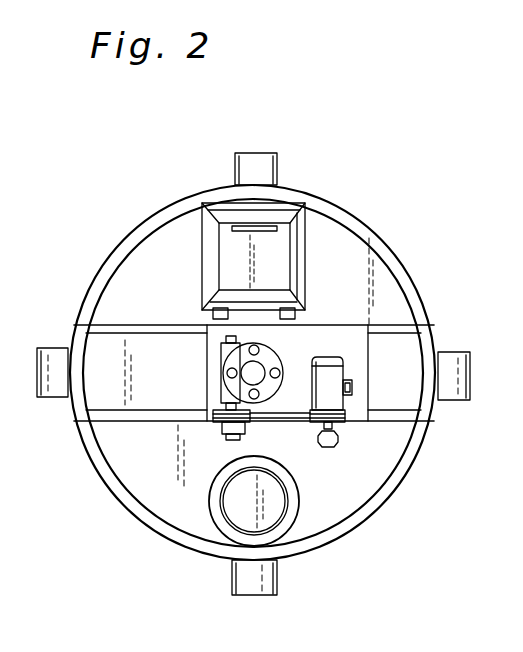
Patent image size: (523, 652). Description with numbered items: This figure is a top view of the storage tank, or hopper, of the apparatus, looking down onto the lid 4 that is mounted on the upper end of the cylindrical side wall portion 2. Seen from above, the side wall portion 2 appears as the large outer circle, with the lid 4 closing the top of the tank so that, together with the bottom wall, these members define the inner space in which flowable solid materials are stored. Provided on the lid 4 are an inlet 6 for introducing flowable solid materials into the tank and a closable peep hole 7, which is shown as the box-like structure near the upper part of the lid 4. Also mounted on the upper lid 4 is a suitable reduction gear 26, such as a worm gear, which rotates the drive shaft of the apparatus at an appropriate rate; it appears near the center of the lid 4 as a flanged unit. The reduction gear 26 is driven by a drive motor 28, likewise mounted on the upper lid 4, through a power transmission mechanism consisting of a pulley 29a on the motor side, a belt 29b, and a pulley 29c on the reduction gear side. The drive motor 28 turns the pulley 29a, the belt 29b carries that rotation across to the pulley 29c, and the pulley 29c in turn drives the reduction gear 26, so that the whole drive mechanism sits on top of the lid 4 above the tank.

The cylindrical side wall portion 2 is at (344, 207).
The lid 4 is at (375, 267).
The inlet 6 is at (230, 531).
The closable peep hole 7 is at (196, 213).
The reduction gear 26 is at (220, 357).
The drive motor 28 is at (348, 404).
The pulley on the motor side 29a is at (331, 448).
The belt 29b is at (288, 419).
The pulley on the reduction gear side 29c is at (225, 439).